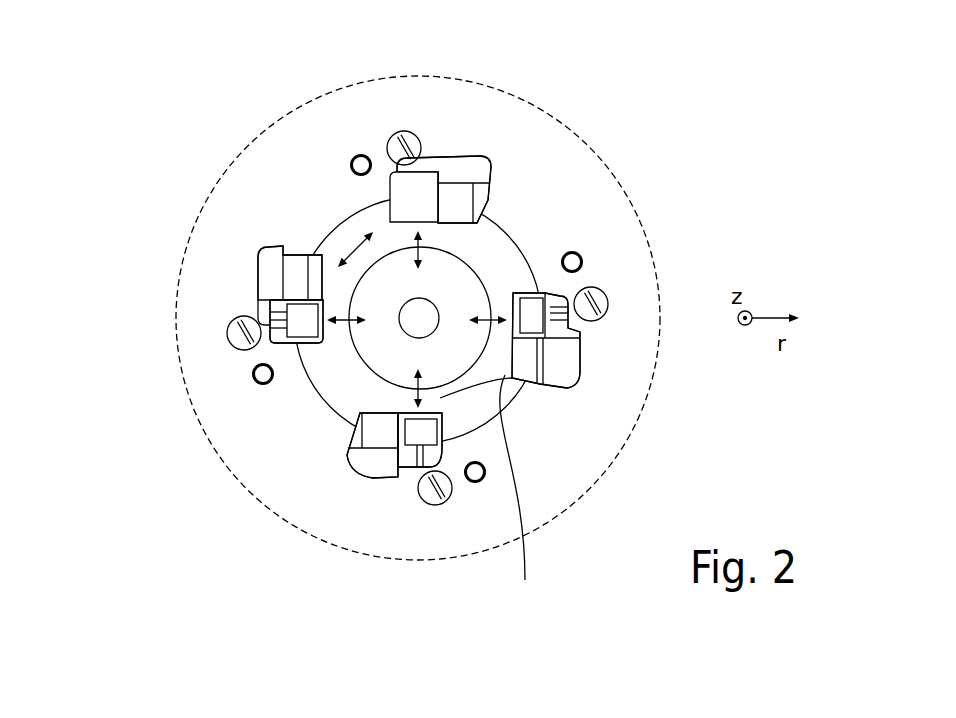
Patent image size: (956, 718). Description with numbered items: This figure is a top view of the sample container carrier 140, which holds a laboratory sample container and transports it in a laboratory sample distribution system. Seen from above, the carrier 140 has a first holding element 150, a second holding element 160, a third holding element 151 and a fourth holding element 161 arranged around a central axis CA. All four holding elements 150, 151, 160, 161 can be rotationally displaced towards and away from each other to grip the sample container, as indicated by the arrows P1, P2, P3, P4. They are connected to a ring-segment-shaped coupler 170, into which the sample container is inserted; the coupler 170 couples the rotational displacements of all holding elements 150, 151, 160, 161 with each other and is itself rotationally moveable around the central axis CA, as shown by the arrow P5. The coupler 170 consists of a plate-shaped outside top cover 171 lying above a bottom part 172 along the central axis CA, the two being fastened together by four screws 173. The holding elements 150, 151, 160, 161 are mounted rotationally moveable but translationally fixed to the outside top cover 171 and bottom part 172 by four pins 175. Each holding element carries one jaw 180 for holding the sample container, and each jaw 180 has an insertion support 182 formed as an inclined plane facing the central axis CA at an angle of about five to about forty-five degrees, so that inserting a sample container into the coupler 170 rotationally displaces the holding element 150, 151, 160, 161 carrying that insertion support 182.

The sample container carrier 140 is at (378, 318).
The first holding element 150 is at (318, 296).
The third holding element 151 is at (432, 190).
The second holding element 160 is at (573, 389).
The fourth holding element 161 is at (398, 418).
The coupler 170 is at (480, 500).
The outside top cover 171 is at (450, 505).
The bottom part 172 is at (462, 404).
The screws 173 is at (229, 339).
The pins 175 is at (260, 374).
The jaws 180 is at (270, 308).
The insertion support 182 is at (543, 325).
The central axis CA is at (419, 318).
The arrow P1 is at (340, 328).
The arrow P2 is at (432, 240).
The arrow P3 is at (492, 314).
The arrow P4 is at (462, 388).
The arrow P5 is at (355, 242).